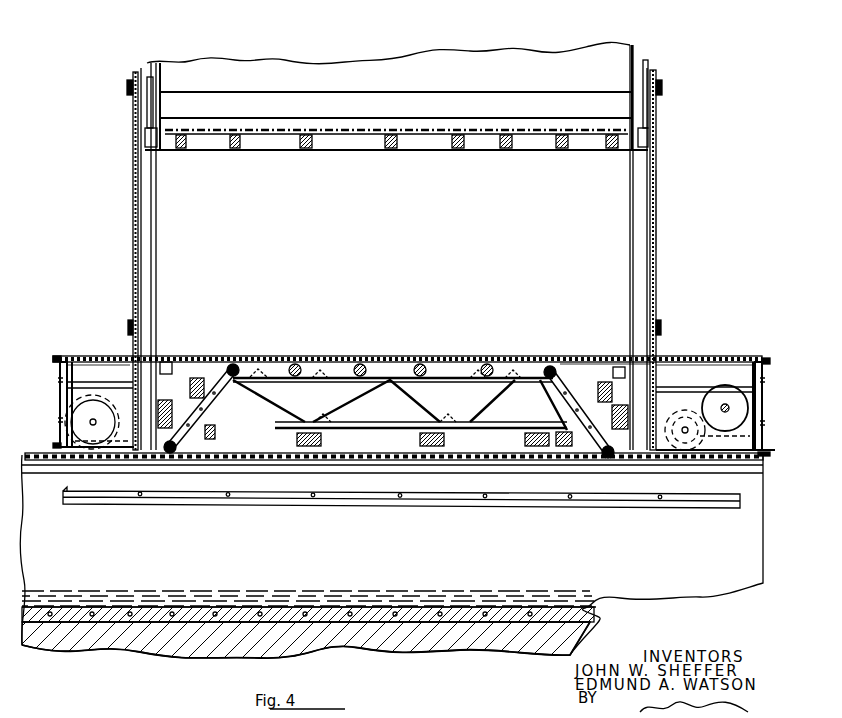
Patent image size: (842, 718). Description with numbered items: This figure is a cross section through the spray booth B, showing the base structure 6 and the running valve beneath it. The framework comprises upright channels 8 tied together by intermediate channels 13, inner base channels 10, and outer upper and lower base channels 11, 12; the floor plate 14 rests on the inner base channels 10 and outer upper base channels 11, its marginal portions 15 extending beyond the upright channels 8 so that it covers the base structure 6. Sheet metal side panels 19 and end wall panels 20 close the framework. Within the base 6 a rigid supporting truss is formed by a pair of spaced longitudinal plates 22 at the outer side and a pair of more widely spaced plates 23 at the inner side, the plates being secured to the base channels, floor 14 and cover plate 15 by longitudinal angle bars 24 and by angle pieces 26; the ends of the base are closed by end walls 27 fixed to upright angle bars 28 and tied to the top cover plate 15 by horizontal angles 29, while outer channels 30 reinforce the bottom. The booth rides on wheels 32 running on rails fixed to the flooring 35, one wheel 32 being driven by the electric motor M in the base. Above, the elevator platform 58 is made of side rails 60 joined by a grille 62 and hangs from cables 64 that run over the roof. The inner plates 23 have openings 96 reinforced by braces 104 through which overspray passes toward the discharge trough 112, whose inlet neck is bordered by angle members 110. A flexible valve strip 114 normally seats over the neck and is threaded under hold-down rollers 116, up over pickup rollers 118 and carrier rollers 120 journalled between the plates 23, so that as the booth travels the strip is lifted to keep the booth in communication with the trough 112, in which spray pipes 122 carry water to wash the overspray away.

The base structure 6 is at (109, 349).
The upright channels 8 is at (152, 266).
The inner base channels 10 is at (173, 379).
The outer upper base channels 11 is at (128, 385).
The outer lower base channels 12 is at (117, 424).
The intermediate channels 13 is at (500, 106).
The floor plate 14 is at (596, 362).
The marginal portions of the floor plate 15 is at (68, 356).
The side panels 19 is at (286, 72).
The end wall panels 20 is at (134, 222).
The outer truss plates 22 is at (88, 367).
The inner truss plates 23 is at (215, 362).
The longitudinal angle bars 24 is at (409, 411).
The angle pieces 26 is at (174, 362).
The end walls 27 is at (65, 405).
The upright angle bars 28 is at (62, 381).
The horizontal angles 29 is at (57, 360).
The outer channels 30 is at (57, 445).
The wheels 32 is at (113, 457).
The flooring 35 is at (590, 620).
The elevator platform 58 is at (355, 152).
The side rails 60 is at (430, 151).
The grille 62 is at (350, 125).
The cables 64 is at (157, 96).
The openings 96 is at (349, 382).
The braces 104 is at (438, 406).
The angle members 110 is at (381, 463).
The discharge trough 112 is at (745, 563).
The flexible valve strip 114 is at (193, 427).
The hold-down rollers 116 is at (176, 458).
The pickup rollers 118 is at (548, 387).
The carrier rollers 120 is at (361, 363).
The spray pipes 122 is at (345, 506).
The booth B is at (666, 201).
The water W is at (207, 592).